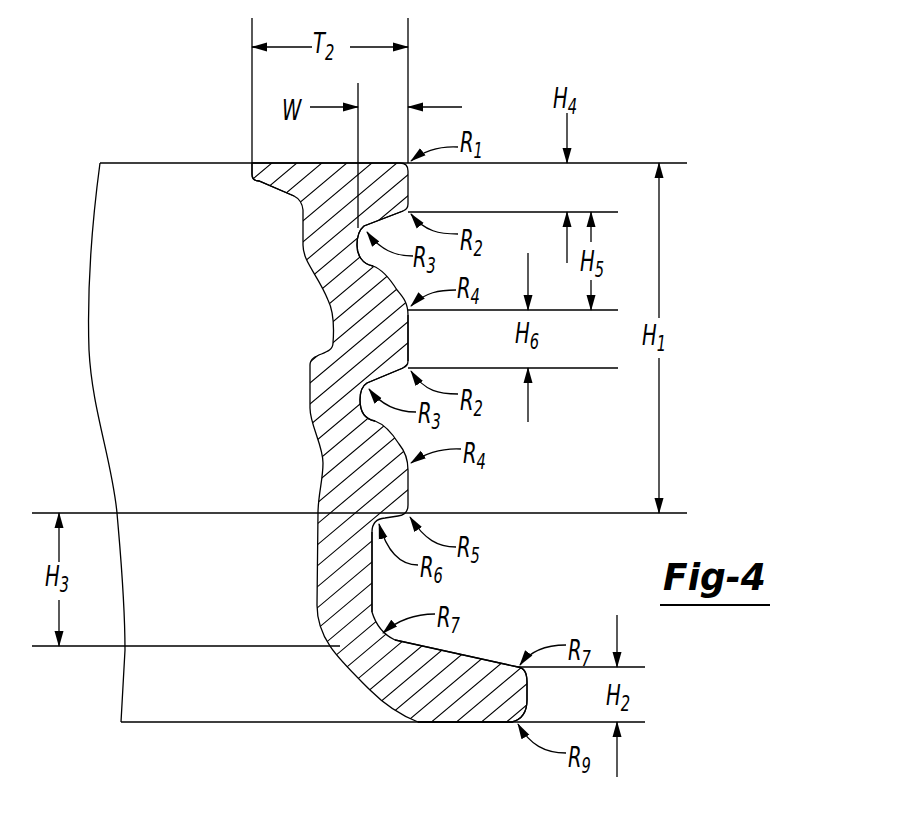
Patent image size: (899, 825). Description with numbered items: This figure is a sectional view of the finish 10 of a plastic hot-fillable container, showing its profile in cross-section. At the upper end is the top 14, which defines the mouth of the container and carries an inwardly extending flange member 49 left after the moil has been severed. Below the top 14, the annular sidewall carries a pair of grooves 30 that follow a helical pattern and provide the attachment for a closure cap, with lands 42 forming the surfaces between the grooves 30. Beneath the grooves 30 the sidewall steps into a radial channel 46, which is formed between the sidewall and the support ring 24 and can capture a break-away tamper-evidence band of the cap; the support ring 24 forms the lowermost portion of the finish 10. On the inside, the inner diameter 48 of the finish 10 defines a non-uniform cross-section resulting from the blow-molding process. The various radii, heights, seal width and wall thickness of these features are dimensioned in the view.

The finish 10 is at (449, 410).
The top 14 is at (392, 164).
The support ring 24 is at (493, 703).
The groove 30 is at (362, 268).
The land 42 is at (410, 342).
The radial channel 46 is at (373, 582).
The inner diameter 48 is at (222, 322).
The inwardly extending flange member 49 is at (250, 176).